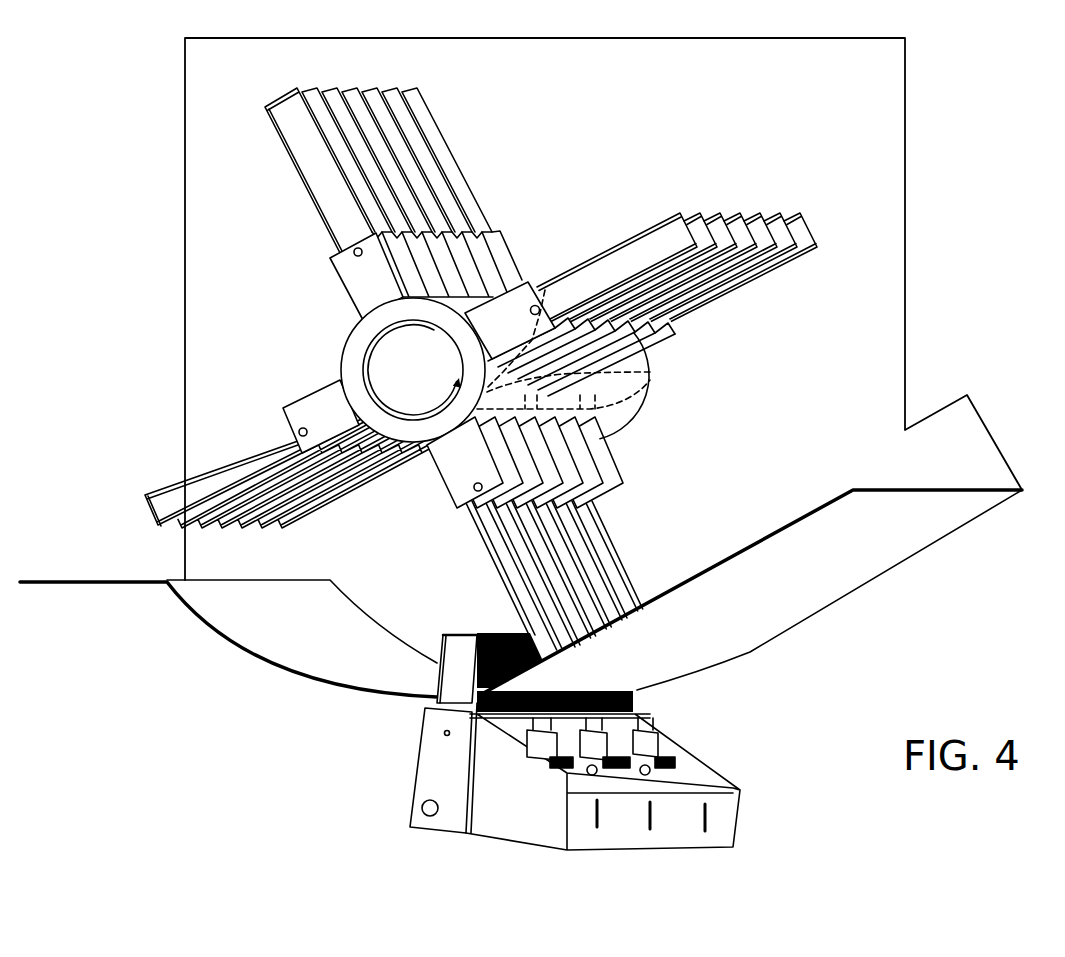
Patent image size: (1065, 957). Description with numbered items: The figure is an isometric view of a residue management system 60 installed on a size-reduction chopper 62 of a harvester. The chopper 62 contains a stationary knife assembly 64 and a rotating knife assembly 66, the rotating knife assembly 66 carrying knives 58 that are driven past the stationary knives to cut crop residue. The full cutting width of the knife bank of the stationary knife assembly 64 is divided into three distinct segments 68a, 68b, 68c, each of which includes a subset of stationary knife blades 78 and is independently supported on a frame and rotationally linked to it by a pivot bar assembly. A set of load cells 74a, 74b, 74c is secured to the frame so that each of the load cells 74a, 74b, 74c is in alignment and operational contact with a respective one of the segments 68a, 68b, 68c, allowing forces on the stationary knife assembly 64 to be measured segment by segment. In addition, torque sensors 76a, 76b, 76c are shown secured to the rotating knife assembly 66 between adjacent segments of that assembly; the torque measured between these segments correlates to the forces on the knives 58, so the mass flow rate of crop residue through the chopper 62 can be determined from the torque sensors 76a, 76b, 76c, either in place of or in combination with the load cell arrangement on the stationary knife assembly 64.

The knives 58 is at (157, 512).
The residue management system 60 is at (760, 697).
The chopper 62 is at (128, 136).
The stationary knife assembly 64 is at (488, 846).
The rotating knife assembly 66 is at (456, 369).
The segment 68a is at (567, 775).
The segment 68b is at (618, 775).
The segment 68c is at (668, 762).
The load cell 74a is at (537, 745).
The load cell 74b is at (602, 743).
The load cell 74c is at (646, 734).
The torque sensor 76a is at (545, 290).
The torque sensor 76b is at (652, 373).
The torque sensor 76c is at (612, 428).
The stationary knife blades 78 is at (448, 650).